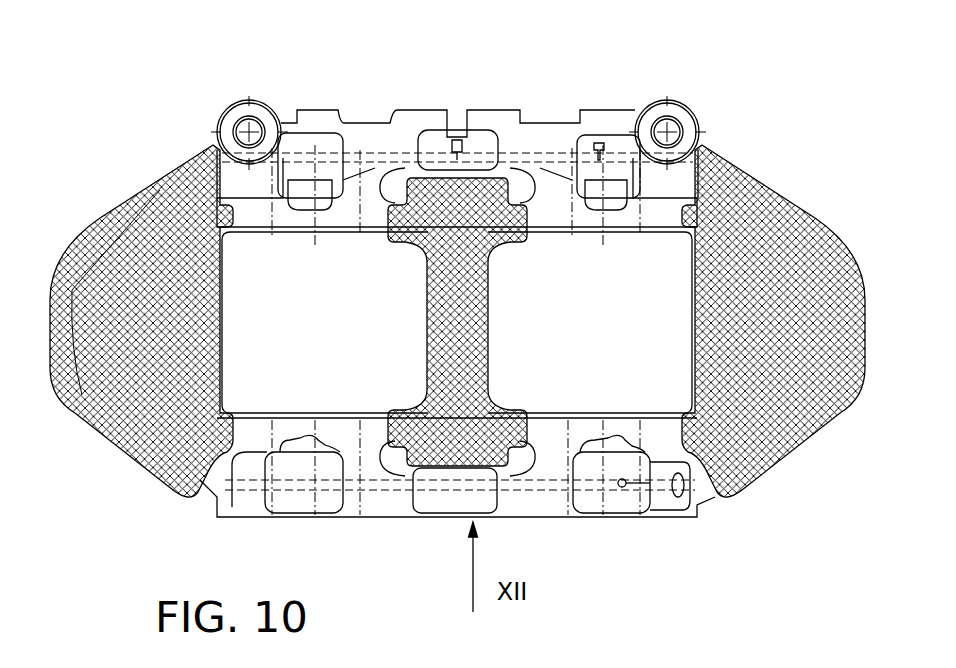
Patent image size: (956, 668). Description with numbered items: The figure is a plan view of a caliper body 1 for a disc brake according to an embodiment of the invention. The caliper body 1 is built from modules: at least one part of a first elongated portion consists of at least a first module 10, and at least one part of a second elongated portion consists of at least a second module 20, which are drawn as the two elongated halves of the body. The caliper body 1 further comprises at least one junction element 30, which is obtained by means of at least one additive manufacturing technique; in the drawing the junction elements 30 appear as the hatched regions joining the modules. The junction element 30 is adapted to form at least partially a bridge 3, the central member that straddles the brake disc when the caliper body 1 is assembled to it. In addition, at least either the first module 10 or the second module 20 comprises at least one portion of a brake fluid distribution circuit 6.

The caliper body 1 is at (785, 163).
The bridge 3 is at (470, 356).
The brake fluid distribution circuit 6 is at (161, 188).
The first module 10 is at (401, 135).
The second module 20 is at (387, 508).
The junction element 30 is at (167, 418).